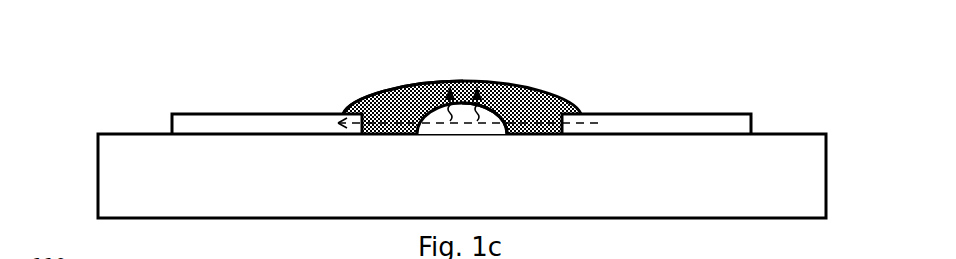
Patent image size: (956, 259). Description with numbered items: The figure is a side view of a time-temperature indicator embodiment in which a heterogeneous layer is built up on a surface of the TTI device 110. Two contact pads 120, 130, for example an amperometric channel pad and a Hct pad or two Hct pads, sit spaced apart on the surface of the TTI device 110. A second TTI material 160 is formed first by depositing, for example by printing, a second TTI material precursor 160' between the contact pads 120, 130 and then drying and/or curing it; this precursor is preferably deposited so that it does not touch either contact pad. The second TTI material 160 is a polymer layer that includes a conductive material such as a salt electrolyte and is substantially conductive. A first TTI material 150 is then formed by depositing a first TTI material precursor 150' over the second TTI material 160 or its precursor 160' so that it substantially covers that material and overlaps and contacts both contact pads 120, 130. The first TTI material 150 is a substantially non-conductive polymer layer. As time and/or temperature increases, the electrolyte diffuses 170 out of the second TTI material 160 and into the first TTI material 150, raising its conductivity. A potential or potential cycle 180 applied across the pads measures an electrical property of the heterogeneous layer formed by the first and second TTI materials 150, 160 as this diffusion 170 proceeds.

The TTI device 110 is at (93, 103).
The contact pad 120 is at (205, 123).
The contact pad 130 is at (733, 114).
The first TTI material 150 is at (422, 89).
The first TTI material precursor 150' is at (403, 97).
The second TTI material 160 is at (526, 91).
The second TTI material precursor 160' is at (484, 118).
The diffusion of electrolyte 170 is at (445, 99).
The potential or potential cycle 180 is at (538, 125).